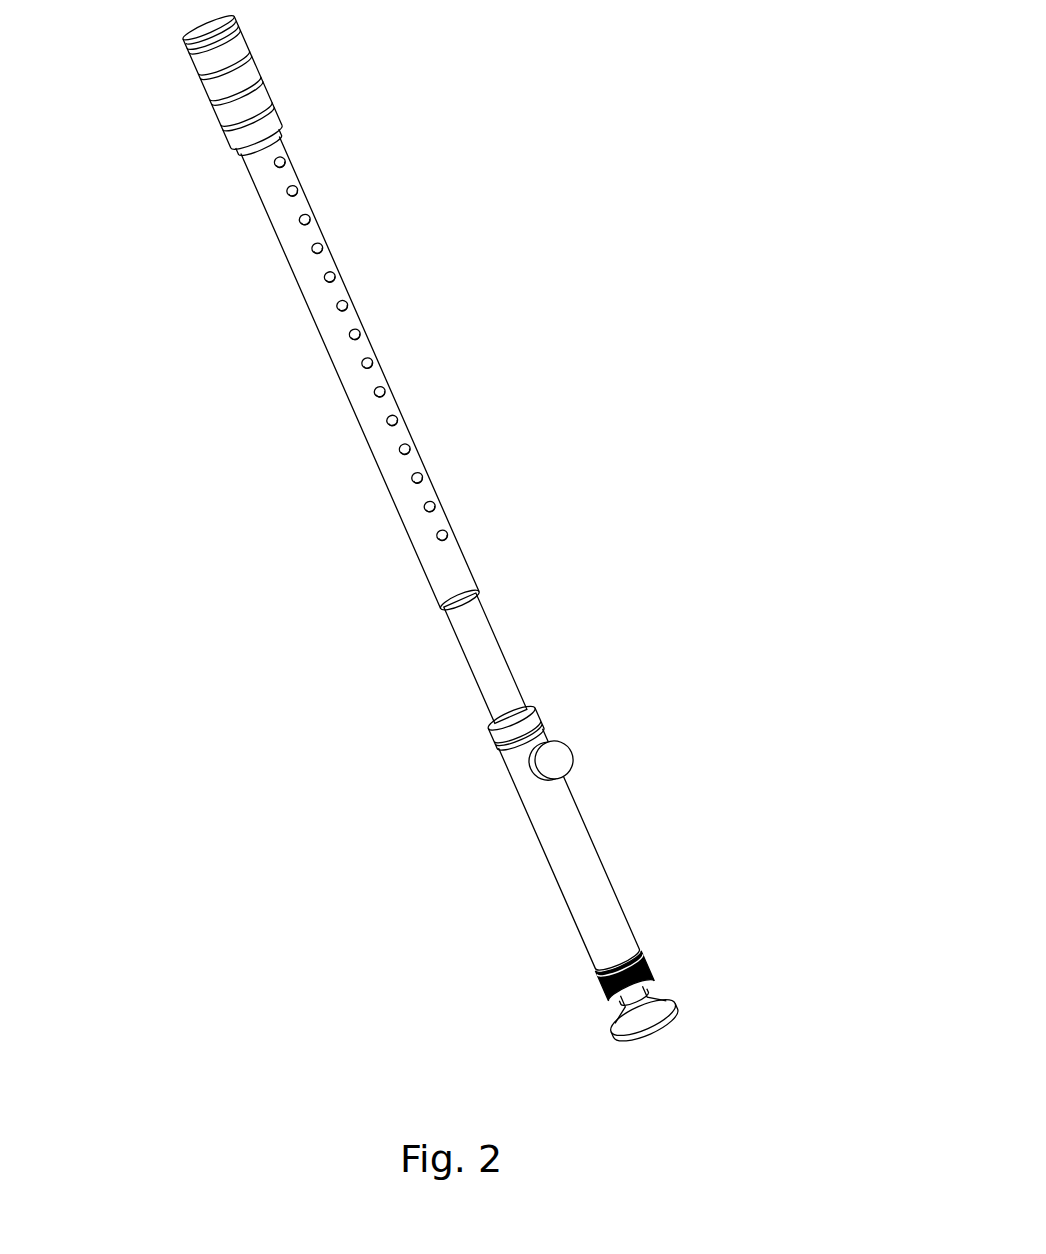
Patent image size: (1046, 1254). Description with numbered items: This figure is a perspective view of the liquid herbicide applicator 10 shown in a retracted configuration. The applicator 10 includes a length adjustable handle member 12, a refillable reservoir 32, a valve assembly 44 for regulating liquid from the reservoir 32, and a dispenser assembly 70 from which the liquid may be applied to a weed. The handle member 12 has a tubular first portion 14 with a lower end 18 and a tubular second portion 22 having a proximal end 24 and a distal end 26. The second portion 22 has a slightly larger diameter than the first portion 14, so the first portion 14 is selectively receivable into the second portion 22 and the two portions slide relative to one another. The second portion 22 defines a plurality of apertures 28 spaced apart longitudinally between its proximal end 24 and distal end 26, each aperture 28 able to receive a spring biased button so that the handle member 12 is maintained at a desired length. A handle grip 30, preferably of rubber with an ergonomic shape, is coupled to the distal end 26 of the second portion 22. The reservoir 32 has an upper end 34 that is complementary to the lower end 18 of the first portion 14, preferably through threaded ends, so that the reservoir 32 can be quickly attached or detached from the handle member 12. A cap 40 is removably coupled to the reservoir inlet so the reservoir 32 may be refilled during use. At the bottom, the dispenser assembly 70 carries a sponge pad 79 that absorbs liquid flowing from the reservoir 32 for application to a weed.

The liquid herbicide applicator 10 is at (625, 185).
The length adjustable handle member 12 is at (421, 296).
The first portion 14 is at (483, 658).
The lower end 18 is at (503, 700).
The second portion 22 is at (365, 382).
The proximal end 24 is at (468, 588).
The distal end 26 is at (270, 152).
The apertures 28 is at (335, 278).
The handle grip 30 is at (240, 97).
The reservoir 32 is at (578, 872).
The upper end 34 is at (515, 743).
The cap 40 is at (552, 757).
The valve assembly 44 is at (667, 962).
The dispenser assembly 70 is at (605, 1038).
The sponge pad 79 is at (649, 1020).